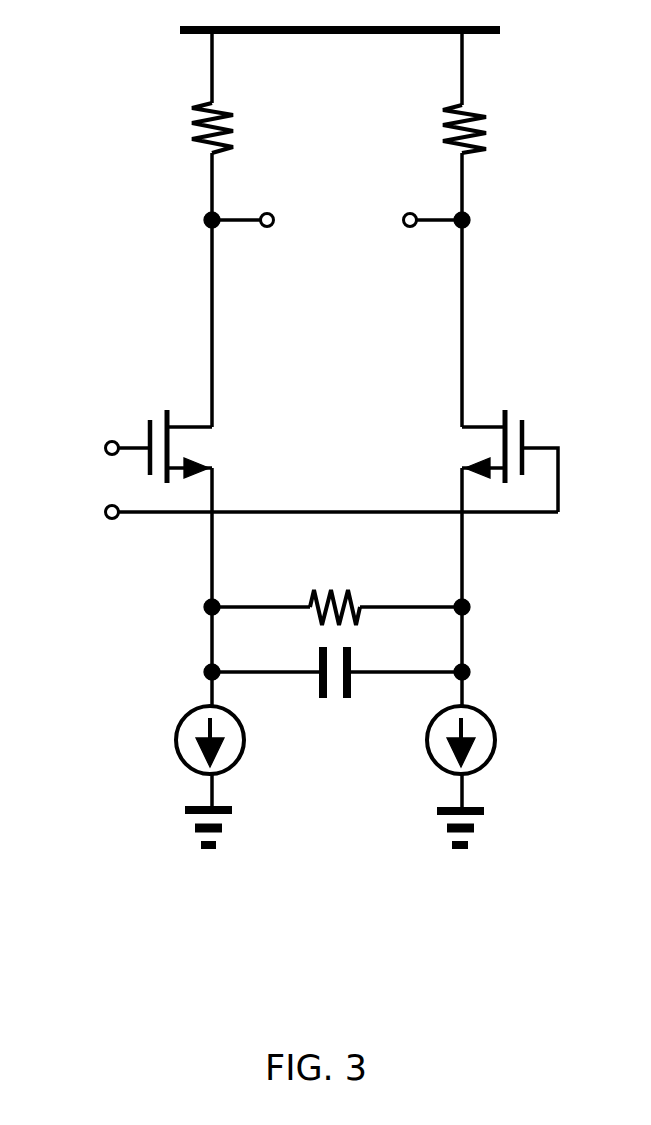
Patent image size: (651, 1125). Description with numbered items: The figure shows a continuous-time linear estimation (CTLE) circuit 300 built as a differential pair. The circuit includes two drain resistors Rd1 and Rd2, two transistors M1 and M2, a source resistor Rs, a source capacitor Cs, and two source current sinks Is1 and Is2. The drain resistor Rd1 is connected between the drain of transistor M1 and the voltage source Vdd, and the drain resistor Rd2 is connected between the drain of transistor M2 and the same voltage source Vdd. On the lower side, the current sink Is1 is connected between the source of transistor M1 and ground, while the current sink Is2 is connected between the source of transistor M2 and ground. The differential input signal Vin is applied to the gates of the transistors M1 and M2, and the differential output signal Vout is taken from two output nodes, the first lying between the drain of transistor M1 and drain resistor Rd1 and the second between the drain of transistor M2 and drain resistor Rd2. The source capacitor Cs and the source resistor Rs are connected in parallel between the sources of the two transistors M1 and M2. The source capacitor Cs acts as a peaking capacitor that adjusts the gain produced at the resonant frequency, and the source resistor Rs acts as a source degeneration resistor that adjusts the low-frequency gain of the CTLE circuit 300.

The CTLE circuit 300 is at (306, 548).
The voltage source Vdd is at (386, 31).
The drain resistor Rd1 is at (165, 128).
The drain resistor Rd2 is at (507, 129).
The differential output signal Vout is at (337, 221).
The transistor M1 is at (203, 446).
The transistor M2 is at (469, 461).
The differential input signal Vin is at (289, 480).
The source resistor Rs is at (337, 580).
The source capacitor Cs is at (337, 698).
The current sink Is1 is at (176, 775).
The current sink Is2 is at (490, 775).